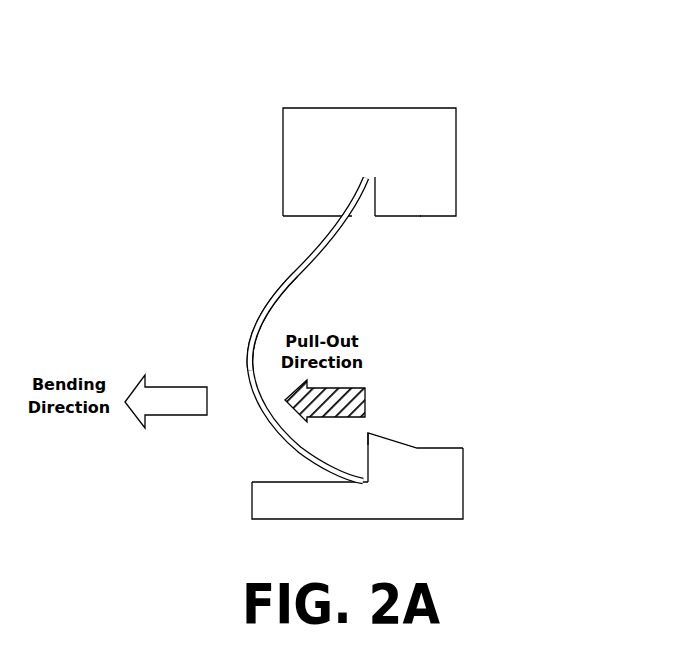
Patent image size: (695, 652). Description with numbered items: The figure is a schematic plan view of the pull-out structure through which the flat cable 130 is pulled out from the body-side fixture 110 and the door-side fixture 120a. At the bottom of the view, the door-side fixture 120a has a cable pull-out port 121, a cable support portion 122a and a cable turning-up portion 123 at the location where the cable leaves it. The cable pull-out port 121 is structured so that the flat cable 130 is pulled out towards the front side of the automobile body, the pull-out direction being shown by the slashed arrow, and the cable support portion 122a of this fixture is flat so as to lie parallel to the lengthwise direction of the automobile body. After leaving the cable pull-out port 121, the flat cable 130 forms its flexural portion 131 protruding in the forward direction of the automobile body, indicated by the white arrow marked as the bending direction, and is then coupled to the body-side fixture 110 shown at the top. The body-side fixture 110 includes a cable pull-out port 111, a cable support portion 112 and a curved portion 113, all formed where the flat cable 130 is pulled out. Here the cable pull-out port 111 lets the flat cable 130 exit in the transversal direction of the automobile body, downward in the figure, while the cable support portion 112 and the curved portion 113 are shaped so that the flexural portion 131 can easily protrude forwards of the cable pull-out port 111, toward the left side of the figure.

The body-side fixture 110 is at (461, 83).
The cable pull-out port 111 is at (373, 173).
The cable support portion 112 is at (375, 206).
The curved portion 113 is at (357, 213).
The door-side fixture 120a is at (214, 523).
The cable pull-out port 121 is at (370, 480).
The cable support portion 122a is at (282, 482).
The cable turning-up portion 123 is at (357, 454).
The flat cable 130 is at (300, 268).
The flexural portion 131 is at (248, 352).